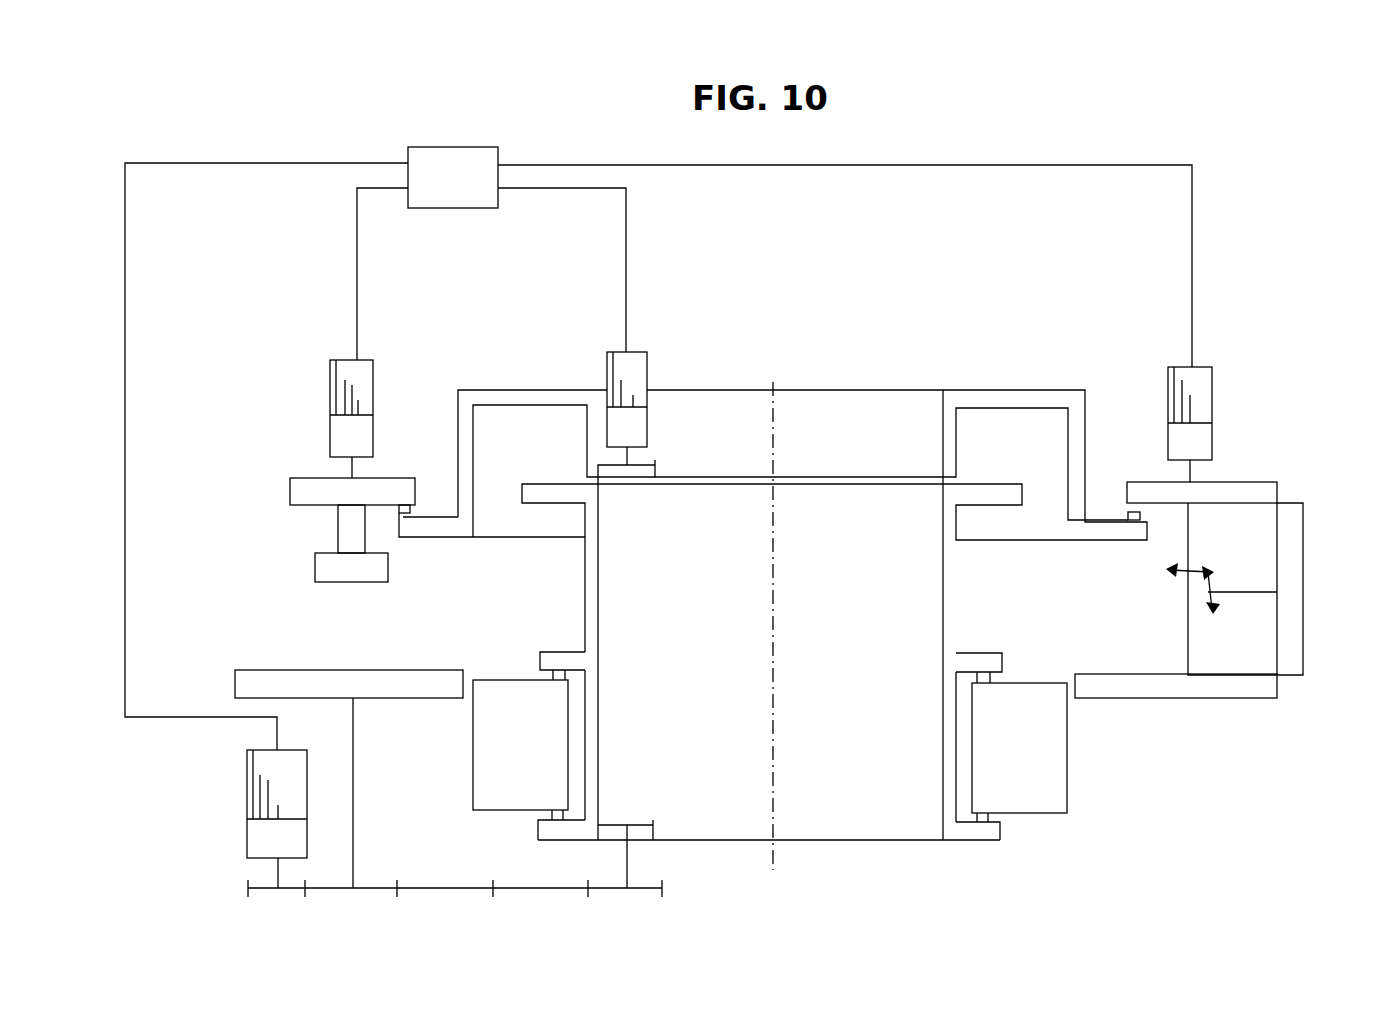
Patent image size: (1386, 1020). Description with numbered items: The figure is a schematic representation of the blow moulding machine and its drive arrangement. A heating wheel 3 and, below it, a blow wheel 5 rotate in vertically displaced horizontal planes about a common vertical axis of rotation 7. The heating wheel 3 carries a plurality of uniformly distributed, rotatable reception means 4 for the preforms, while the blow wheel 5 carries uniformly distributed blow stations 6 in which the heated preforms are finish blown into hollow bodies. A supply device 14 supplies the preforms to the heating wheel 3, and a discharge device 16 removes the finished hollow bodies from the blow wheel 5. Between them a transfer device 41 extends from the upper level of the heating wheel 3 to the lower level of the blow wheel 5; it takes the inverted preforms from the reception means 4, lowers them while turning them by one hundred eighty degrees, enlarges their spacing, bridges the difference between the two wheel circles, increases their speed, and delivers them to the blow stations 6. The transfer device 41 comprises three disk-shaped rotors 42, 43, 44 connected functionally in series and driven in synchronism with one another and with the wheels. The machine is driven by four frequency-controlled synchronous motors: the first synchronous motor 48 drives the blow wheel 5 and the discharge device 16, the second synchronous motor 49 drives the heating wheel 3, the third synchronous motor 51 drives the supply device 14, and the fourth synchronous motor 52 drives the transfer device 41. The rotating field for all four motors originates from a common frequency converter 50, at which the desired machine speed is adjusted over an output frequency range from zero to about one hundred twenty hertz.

The heating wheel 3 is at (997, 391).
The reception means 4 is at (402, 533).
The blow wheel 5 is at (977, 828).
The blow stations 6 is at (1055, 767).
The vertical axis of rotation 7 is at (775, 383).
The supply device 14 is at (300, 482).
The discharge device 16 is at (280, 683).
The transfer device 41 is at (1320, 666).
The disk-shaped rotor 42 is at (1245, 490).
The disk-shaped rotor 43 is at (1290, 578).
The disk-shaped rotor 44 is at (1247, 687).
The first synchronous motor 48 is at (270, 790).
The second synchronous motor 49 is at (627, 363).
The frequency converter 50 is at (485, 160).
The third synchronous motor 51 is at (352, 388).
The fourth synchronous motor 52 is at (1202, 380).